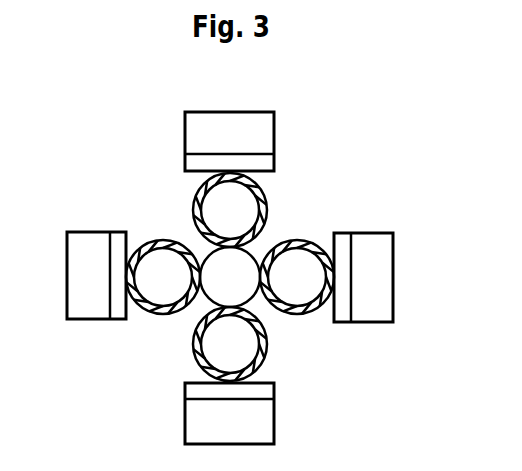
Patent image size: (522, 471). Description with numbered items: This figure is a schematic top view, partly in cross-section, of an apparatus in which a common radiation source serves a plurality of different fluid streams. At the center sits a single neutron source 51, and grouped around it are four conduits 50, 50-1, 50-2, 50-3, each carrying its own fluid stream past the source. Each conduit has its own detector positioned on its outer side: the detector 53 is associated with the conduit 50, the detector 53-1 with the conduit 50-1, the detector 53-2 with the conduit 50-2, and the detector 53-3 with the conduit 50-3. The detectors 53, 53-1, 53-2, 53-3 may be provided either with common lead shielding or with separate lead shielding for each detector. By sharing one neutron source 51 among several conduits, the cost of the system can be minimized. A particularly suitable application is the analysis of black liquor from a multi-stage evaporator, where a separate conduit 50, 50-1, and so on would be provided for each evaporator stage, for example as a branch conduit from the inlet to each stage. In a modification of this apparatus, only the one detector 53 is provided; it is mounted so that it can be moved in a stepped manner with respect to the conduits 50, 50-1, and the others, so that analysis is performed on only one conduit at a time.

The conduit 50 is at (308, 313).
The conduit 50-1 is at (193, 348).
The conduit 50-2 is at (150, 238).
The conduit 50-3 is at (192, 200).
The neutron source 51 is at (240, 260).
The detector 53 is at (367, 240).
The detector 53-1 is at (268, 418).
The detector 53-2 is at (80, 310).
The detector 53-3 is at (255, 134).